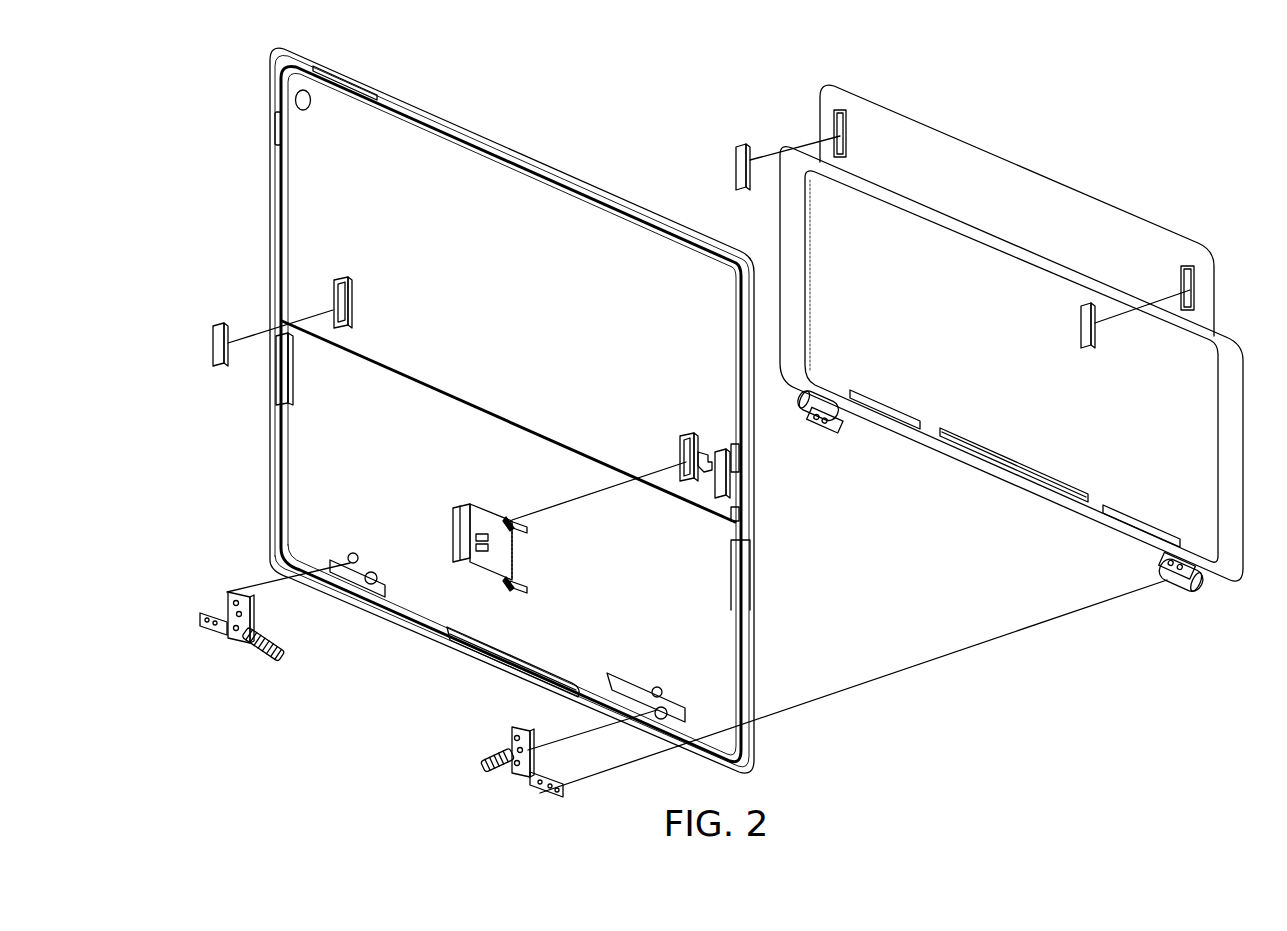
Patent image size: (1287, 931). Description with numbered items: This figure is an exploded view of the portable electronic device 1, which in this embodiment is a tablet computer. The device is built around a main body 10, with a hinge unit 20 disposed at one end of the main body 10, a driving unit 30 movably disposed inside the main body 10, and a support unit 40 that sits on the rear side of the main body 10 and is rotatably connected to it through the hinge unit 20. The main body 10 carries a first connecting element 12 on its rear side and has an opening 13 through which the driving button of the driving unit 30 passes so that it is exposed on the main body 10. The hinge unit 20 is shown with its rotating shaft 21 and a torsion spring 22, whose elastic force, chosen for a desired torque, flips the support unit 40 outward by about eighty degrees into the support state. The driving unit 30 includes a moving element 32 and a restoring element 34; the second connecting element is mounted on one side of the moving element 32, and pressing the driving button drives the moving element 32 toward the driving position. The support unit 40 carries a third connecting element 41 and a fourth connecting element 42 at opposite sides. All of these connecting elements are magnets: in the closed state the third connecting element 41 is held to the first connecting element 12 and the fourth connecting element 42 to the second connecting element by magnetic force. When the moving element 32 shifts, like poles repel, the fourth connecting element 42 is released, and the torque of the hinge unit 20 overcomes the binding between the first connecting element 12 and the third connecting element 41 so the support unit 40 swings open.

The portable electronic device 1 is at (204, 161).
The main body 10 is at (270, 243).
The first connecting element 12 is at (212, 344).
The opening 13 is at (680, 462).
The hinge unit 20 is at (661, 707).
The rotating shaft 21 is at (365, 716).
The torsion spring 22 is at (250, 652).
The driving unit 30 is at (515, 548).
The moving element 32 is at (486, 528).
The restoring element 34 is at (515, 519).
The support unit 40 is at (1060, 194).
The third connecting element 41 is at (733, 158).
The fourth connecting element 42 is at (1081, 338).